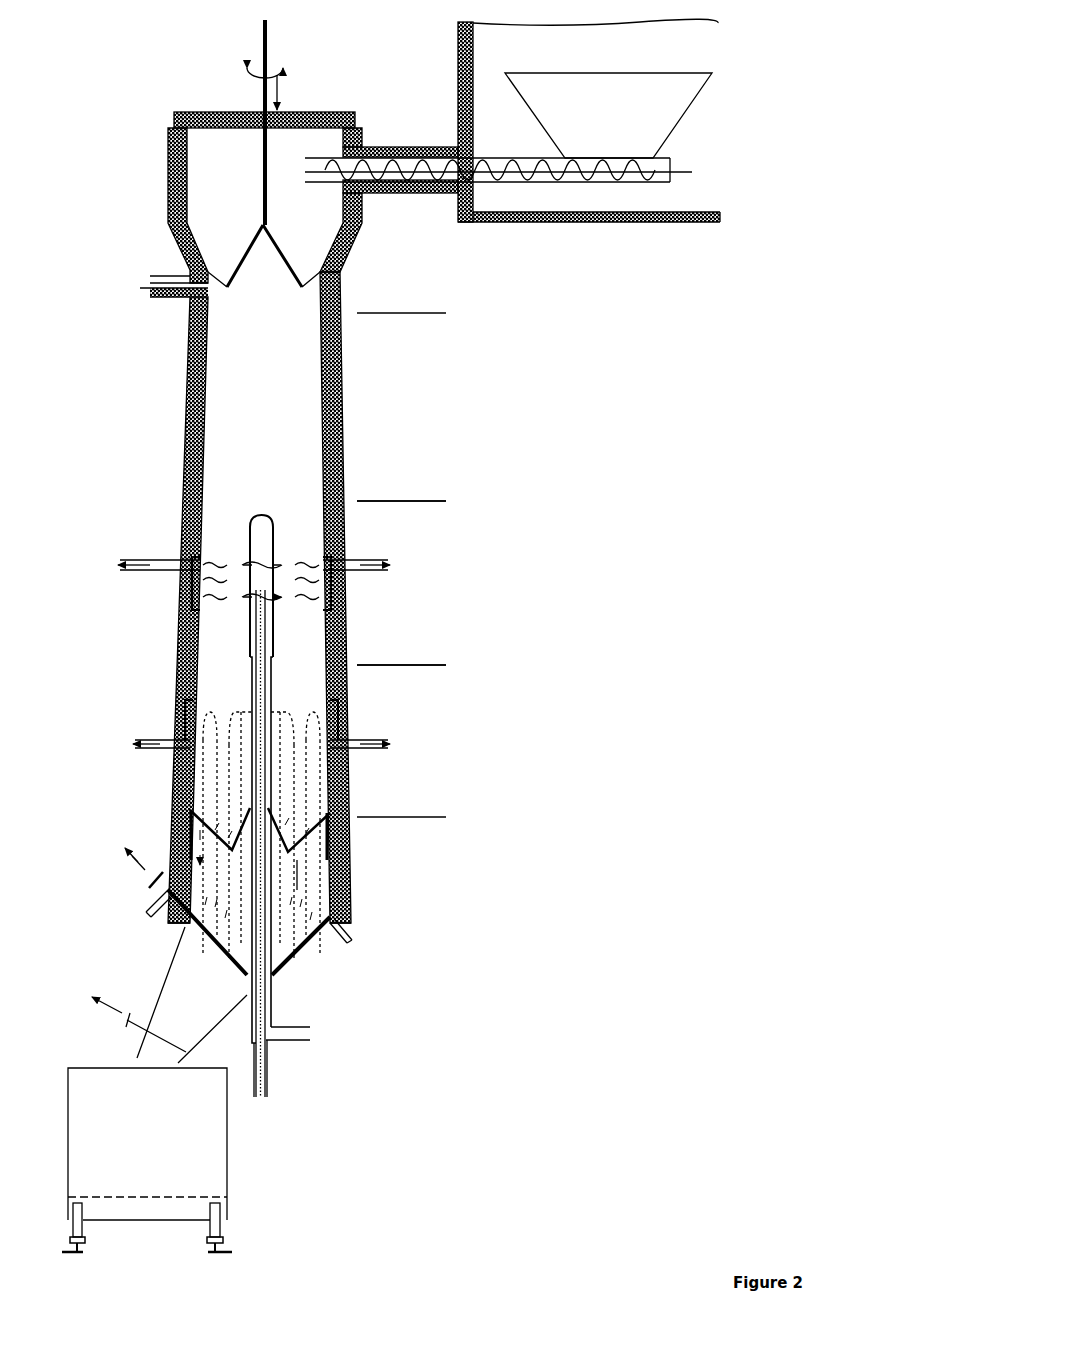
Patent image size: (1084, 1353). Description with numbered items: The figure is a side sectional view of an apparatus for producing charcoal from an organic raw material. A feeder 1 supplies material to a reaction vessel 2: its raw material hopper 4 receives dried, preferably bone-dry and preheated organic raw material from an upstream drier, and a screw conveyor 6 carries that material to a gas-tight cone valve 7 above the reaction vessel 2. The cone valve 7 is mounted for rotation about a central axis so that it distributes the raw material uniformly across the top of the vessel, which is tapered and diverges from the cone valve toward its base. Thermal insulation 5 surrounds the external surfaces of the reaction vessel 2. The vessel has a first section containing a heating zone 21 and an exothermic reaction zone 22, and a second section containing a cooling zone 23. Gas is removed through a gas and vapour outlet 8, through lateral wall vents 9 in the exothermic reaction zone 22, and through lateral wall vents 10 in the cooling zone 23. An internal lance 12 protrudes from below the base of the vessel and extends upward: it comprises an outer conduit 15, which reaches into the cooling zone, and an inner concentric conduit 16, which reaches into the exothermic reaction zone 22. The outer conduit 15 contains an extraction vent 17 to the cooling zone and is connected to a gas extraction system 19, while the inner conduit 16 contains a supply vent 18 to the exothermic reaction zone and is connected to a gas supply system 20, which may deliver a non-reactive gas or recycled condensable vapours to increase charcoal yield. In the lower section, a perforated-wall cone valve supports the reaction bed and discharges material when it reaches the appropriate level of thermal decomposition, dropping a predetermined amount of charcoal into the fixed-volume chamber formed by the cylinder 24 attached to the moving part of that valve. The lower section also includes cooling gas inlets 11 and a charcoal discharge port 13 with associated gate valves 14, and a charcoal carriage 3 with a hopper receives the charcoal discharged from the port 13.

The feeder 1 is at (589, 130).
The reaction vessel 2 is at (240, 151).
The charcoal carriage 3 is at (147, 1160).
The raw material hopper 4 is at (608, 115).
The thermal insulation 5 is at (195, 448).
The screw conveyor 6 is at (498, 157).
The gas-tight cone valve 7 is at (264, 245).
The gas and vapour outlet 8 is at (143, 288).
The lateral wall vents 9 is at (254, 573).
The lateral wall vents 10 is at (261, 724).
The cooling gas inlets 11 is at (143, 913).
The internal lance 12 is at (262, 576).
The charcoal discharge port 13 is at (259, 904).
The gate valves 14 is at (169, 995).
The outer conduit 15 is at (252, 687).
The inner conduit 16 is at (260, 702).
The extraction vent 17 is at (261, 836).
The supply vent 18 is at (250, 600).
The gas extraction system 19 is at (316, 1033).
The gas supply system 20 is at (276, 1082).
The heating zone 21 is at (409, 407).
The exothermic reaction zone 22 is at (407, 583).
The cooling zone 23 is at (407, 741).
The cylinder 24 is at (297, 877).